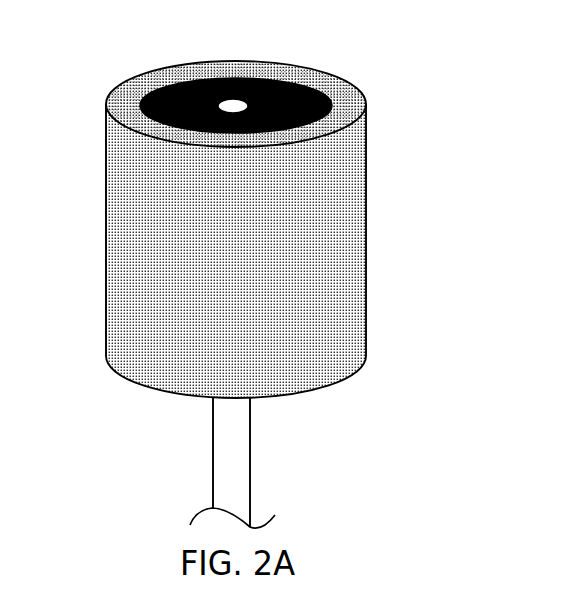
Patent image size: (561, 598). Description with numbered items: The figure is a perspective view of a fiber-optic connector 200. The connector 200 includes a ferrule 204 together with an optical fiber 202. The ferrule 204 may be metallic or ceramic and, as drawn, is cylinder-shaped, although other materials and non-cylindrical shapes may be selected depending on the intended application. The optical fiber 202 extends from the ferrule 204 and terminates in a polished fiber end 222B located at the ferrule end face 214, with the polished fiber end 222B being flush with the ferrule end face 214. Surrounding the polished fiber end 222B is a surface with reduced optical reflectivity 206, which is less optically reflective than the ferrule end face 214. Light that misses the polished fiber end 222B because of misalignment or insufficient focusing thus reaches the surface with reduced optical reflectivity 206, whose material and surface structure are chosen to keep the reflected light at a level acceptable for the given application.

The fiber-optic connector 200 is at (247, 272).
The optical fiber 202 is at (237, 498).
The ferrule 204 is at (350, 237).
The surface with reduced optical reflectivity 206 is at (135, 97).
The ferrule end face 214 is at (342, 102).
The polished fiber end 222B is at (232, 103).